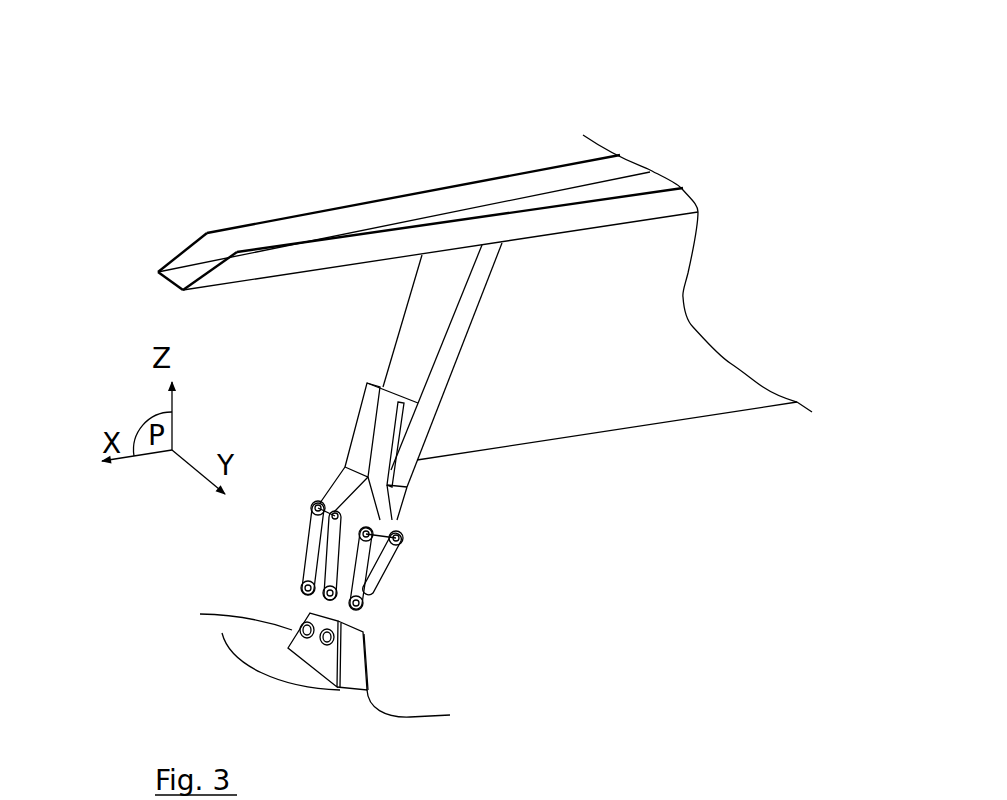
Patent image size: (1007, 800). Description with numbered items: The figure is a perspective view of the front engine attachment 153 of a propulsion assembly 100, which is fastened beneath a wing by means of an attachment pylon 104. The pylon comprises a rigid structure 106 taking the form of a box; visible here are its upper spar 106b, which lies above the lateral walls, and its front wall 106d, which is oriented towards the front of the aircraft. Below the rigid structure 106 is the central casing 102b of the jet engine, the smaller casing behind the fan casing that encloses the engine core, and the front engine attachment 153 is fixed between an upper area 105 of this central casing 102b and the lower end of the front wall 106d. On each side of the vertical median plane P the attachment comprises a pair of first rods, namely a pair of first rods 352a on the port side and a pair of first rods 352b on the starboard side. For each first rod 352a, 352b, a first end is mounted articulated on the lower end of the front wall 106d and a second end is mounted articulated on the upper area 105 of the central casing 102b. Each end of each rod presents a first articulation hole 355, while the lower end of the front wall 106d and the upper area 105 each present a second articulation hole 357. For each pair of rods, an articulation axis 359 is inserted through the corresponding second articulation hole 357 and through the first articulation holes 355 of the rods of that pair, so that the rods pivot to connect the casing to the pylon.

The propulsion assembly 100 is at (168, 164).
The attachment pylon 104 is at (722, 115).
The rigid structure 106 is at (618, 106).
The upper spar 106b is at (290, 232).
The front wall 106d is at (432, 285).
The front engine attachment 153 is at (456, 526).
The articulation axis 359 is at (330, 513).
The first articulation hole 355 is at (333, 513).
The first rods on starboard side 352b is at (323, 585).
The first rods on port side 352a is at (362, 590).
The second articulation hole 357 is at (290, 648).
The upper area of the central casing 105 is at (318, 667).
The central casing 102b is at (450, 715).